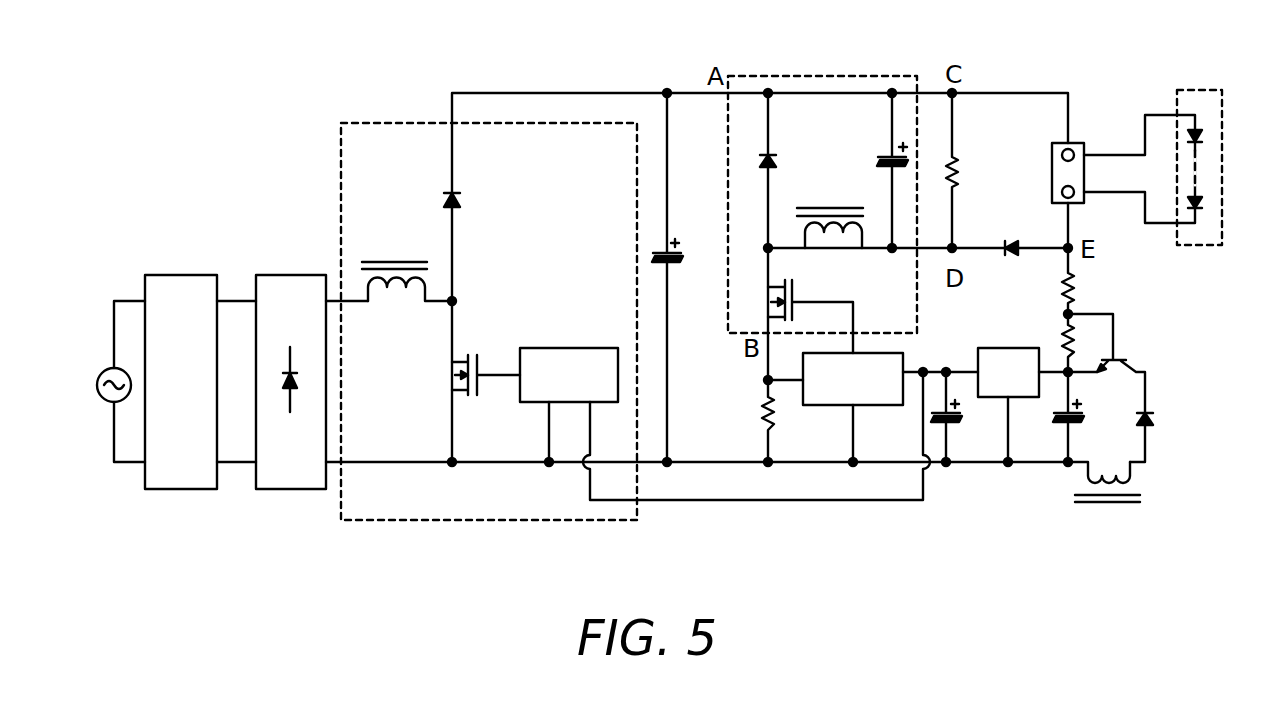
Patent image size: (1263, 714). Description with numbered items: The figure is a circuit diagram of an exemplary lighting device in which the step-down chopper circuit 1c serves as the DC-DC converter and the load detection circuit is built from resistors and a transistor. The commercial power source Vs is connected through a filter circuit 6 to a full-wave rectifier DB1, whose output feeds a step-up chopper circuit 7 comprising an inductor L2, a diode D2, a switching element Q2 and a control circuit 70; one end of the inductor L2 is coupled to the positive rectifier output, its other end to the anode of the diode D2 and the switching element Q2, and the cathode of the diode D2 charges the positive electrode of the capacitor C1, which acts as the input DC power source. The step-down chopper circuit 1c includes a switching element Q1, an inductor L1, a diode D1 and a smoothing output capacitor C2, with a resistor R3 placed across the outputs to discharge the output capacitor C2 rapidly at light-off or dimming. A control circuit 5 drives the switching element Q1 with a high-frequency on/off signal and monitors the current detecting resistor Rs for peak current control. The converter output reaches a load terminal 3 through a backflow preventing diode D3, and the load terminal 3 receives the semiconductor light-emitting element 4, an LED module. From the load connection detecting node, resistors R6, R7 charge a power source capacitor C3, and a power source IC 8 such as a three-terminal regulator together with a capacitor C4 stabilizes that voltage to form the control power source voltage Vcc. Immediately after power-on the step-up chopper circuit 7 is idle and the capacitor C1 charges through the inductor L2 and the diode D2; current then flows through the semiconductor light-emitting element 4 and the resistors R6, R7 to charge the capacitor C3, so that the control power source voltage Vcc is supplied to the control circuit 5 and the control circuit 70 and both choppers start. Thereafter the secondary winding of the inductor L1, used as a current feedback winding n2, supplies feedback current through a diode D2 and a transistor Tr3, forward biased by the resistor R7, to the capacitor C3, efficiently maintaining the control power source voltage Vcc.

The filter circuit 6 is at (180, 275).
The step-up chopper circuit 7 is at (372, 123).
The control circuit 70 is at (568, 348).
The step-down chopper circuit 1c is at (837, 76).
The control circuit 5 is at (842, 405).
The power source IC 8 is at (993, 348).
The load terminal 3 is at (1073, 143).
The semiconductor light-emitting element 4 is at (1197, 90).
The commercial power source Vs is at (104, 397).
The full-wave rectifier DB1 is at (291, 365).
The inductor L2 is at (407, 295).
The diode D2 is at (820, 312).
The switching element Q2 is at (486, 357).
The capacitor C1 is at (685, 277).
The diode D1 is at (788, 236).
The inductor L1 is at (830, 215).
The output capacitor C2 is at (875, 170).
The switching element Q1 is at (810, 308).
The current detecting resistor Rs is at (751, 423).
The control power source voltage Vcc is at (938, 351).
The capacitor C4 is at (958, 417).
The power source capacitor C3 is at (1079, 417).
The resistor R3 is at (971, 170).
The backflow preventing diode D3 is at (1016, 267).
The resistor R6 is at (1089, 281).
The resistor R7 is at (1089, 343).
The transistor Tr3 is at (1106, 388).
The current feedback winding n2 is at (1124, 483).